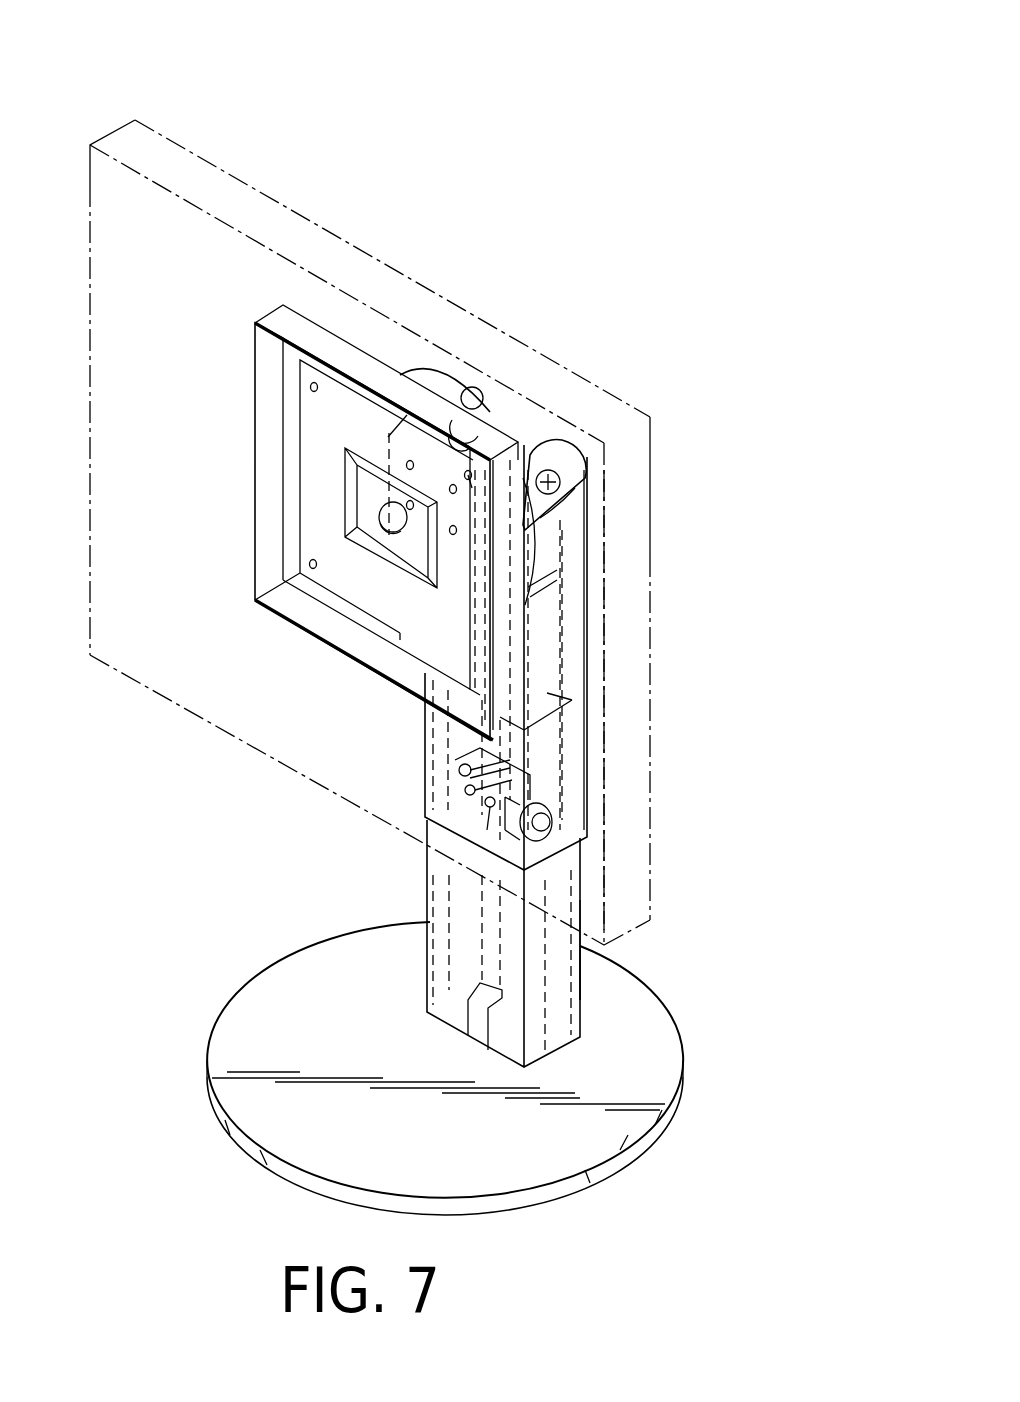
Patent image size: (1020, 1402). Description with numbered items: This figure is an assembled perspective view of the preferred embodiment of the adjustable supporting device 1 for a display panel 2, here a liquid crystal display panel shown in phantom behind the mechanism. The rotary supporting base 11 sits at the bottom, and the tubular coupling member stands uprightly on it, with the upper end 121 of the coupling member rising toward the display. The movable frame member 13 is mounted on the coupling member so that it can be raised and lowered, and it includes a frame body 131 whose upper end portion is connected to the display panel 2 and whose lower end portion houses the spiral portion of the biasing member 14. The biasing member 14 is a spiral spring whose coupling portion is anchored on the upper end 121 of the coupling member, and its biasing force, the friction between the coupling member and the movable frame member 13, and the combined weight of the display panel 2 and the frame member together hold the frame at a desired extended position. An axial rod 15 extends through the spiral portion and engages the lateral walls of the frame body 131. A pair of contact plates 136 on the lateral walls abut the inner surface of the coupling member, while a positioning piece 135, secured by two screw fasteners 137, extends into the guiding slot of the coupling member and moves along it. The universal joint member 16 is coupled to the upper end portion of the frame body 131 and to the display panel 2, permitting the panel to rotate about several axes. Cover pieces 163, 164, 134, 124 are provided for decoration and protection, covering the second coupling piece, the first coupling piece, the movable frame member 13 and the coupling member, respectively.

The adjustable supporting device 1 is at (735, 700).
The display panel 2 is at (148, 142).
The rotary supporting base 11 is at (652, 1038).
The movable frame member 13 is at (615, 560).
The biasing member 14 is at (462, 822).
The axial rod 15 is at (556, 808).
The universal joint member 16 is at (505, 403).
The upper end 121 is at (573, 963).
The cover piece 124 is at (580, 888).
The frame body 131 is at (437, 740).
The cover piece 134 is at (580, 650).
The positioning piece 135 is at (445, 773).
The contact plates 136 is at (578, 618).
The screw fasteners 137 is at (488, 832).
The cover piece 163 is at (315, 340).
The cover piece 164 is at (548, 445).